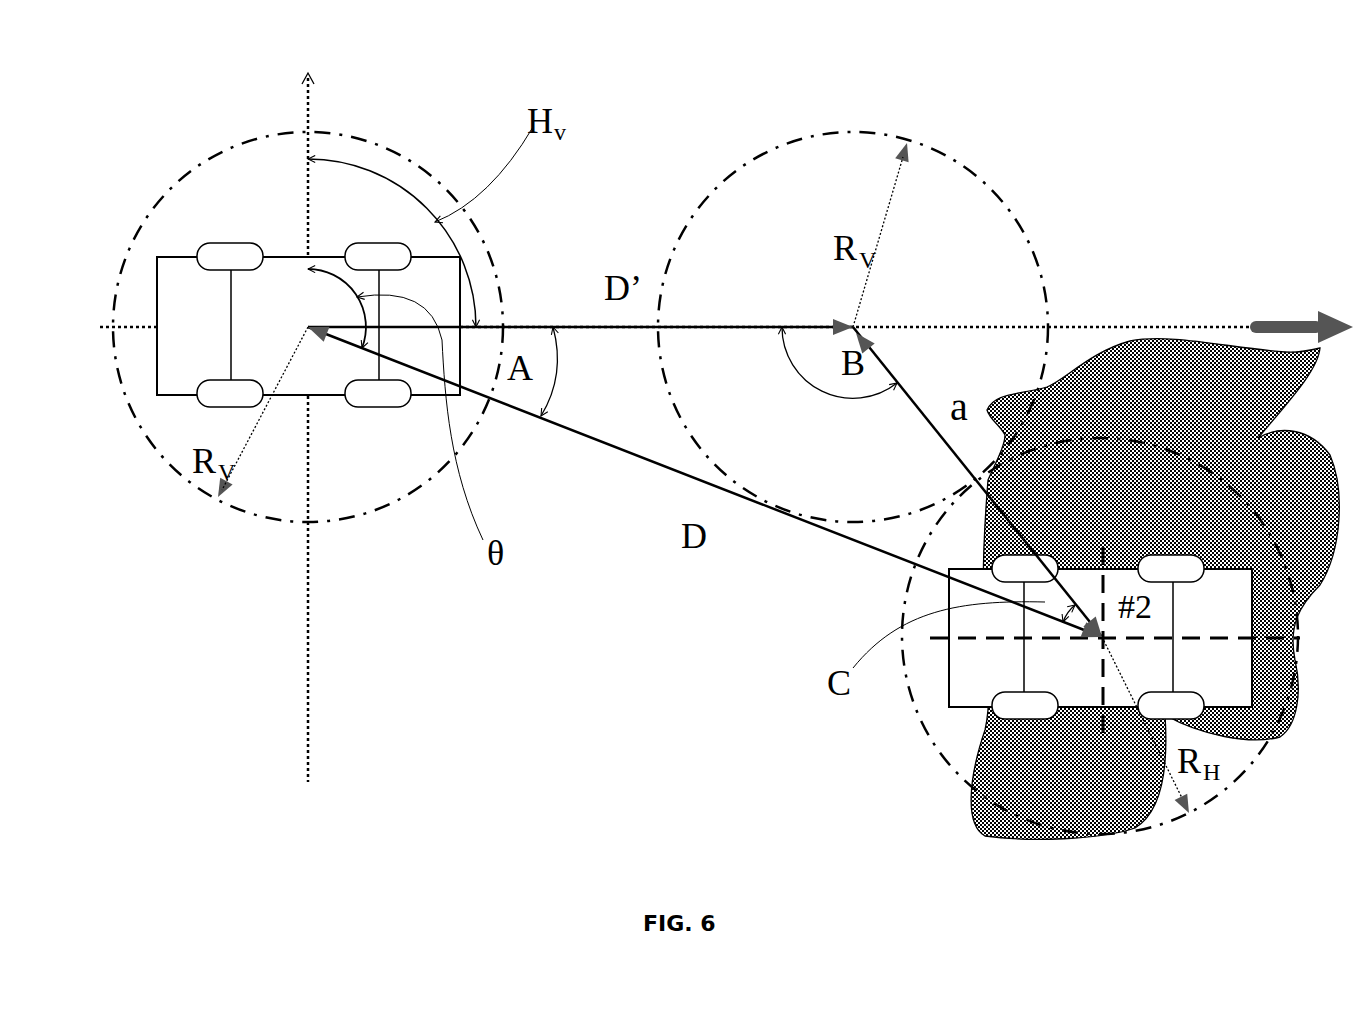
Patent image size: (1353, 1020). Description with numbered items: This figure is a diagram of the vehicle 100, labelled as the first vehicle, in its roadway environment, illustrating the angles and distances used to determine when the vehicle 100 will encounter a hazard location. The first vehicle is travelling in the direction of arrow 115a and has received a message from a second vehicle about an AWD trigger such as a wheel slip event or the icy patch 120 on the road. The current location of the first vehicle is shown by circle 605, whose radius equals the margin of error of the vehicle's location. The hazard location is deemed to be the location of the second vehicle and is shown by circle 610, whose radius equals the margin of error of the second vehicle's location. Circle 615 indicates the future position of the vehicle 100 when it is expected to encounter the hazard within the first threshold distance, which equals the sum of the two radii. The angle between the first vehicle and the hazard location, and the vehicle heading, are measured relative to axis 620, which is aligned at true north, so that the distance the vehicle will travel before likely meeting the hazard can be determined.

The vehicle 100 is at (182, 363).
The icy patch 120 is at (1123, 377).
The arrow 115a is at (1301, 309).
The circle 605 is at (392, 148).
The circle 610 is at (918, 713).
The circle 615 is at (968, 168).
The axis 620 is at (305, 733).